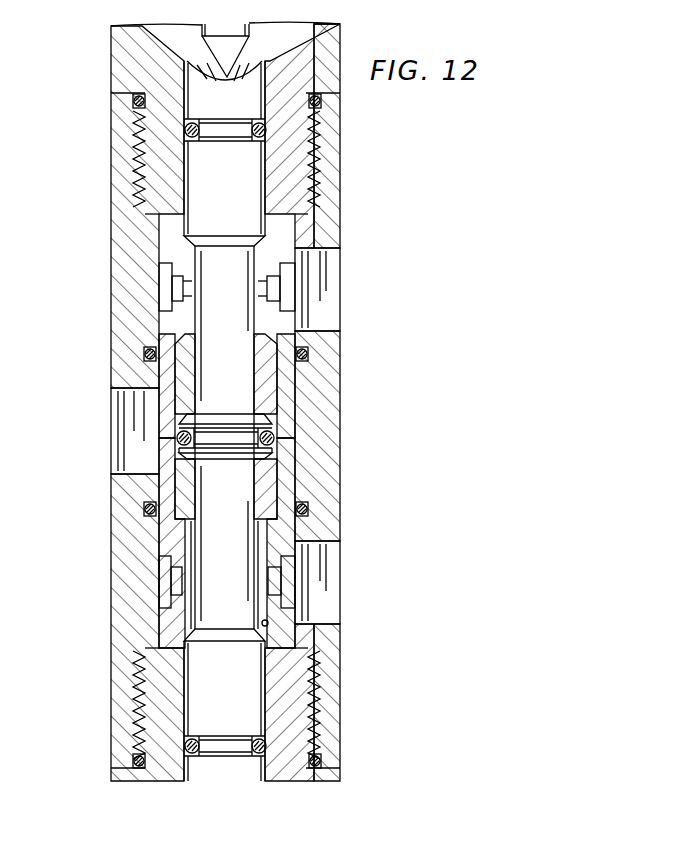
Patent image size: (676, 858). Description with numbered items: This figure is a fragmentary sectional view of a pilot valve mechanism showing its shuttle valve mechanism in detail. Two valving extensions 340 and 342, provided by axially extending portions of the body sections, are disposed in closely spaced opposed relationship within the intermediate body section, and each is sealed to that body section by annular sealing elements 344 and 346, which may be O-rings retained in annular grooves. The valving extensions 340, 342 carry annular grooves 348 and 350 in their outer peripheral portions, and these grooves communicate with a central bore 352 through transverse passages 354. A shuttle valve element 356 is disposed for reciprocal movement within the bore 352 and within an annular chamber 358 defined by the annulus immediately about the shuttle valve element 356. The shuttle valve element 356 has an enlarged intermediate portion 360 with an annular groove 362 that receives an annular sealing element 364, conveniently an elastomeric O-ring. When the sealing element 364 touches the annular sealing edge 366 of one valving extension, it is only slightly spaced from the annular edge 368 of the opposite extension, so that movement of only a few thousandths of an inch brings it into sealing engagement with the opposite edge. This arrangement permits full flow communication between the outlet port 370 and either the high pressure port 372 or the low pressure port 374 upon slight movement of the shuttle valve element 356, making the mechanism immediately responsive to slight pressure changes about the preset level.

The valving extension 340 is at (285, 465).
The valving extension 342 is at (288, 412).
The annular sealing element 344 is at (307, 509).
The annular sealing element 346 is at (307, 355).
The annular groove 348 is at (162, 565).
The annular groove 350 is at (160, 268).
The bore 352 is at (268, 625).
The transverse passages 354 is at (270, 281).
The shuttle valve element 356 is at (186, 318).
The annular chamber 358 is at (268, 375).
The enlarged intermediate portion 360 is at (227, 458).
The annular groove 362 is at (218, 433).
The annular sealing element 364 is at (172, 449).
The annular sealing edge 366 is at (275, 431).
The annular edge 368 is at (172, 435).
The outlet port 370 is at (115, 406).
The high pressure port 372 is at (322, 290).
The low pressure port 374 is at (327, 582).